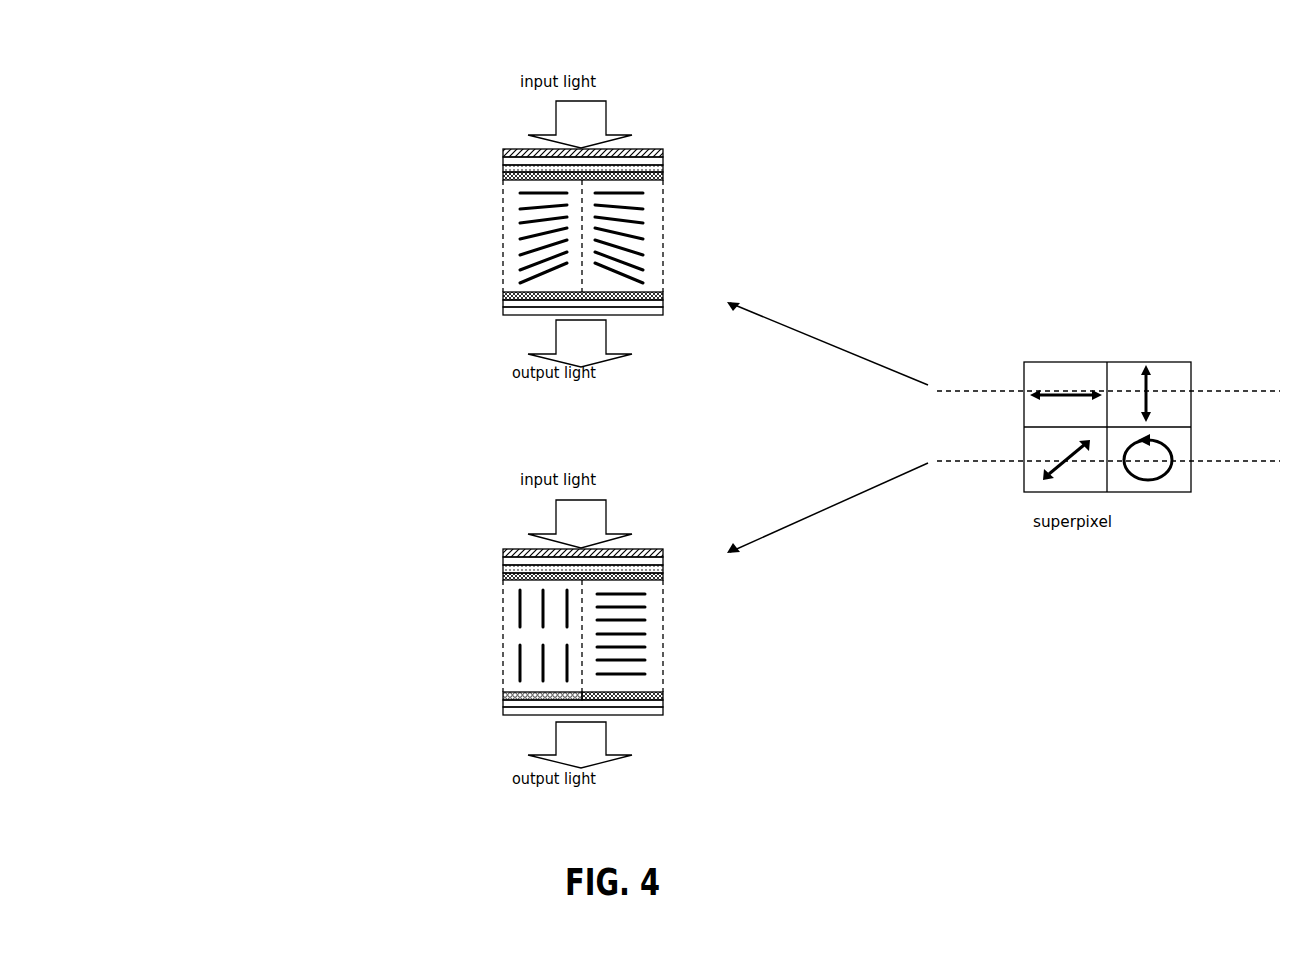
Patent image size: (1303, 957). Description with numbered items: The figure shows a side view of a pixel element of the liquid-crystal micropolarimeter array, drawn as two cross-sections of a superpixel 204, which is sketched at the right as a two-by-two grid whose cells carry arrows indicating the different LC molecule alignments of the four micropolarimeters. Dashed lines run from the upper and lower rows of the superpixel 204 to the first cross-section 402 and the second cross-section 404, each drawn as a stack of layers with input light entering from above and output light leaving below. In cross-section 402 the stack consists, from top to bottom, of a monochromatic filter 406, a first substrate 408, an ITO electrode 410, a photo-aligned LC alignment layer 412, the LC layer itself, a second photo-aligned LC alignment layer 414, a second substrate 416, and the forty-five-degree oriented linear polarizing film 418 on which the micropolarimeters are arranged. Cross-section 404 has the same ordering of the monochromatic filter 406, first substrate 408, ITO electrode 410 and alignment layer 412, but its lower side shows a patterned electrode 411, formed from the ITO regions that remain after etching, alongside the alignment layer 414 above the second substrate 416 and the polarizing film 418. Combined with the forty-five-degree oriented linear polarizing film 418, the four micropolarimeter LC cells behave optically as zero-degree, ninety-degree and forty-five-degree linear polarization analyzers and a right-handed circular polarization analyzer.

The cross-section 402 is at (632, 209).
The cross-section 404 is at (632, 554).
The monochromatic filter 406 is at (503, 152).
The first substrate 408 is at (503, 161).
The ITO electrode 410 is at (665, 167).
The electrodes 411 is at (503, 695).
The photo-aligned LC alignment layer 412 is at (663, 177).
The photo-aligned LC alignment layer 414 is at (663, 293).
The second substrate 416 is at (503, 303).
The 45° oriented linear polarizing film 418 is at (503, 708).
The superpixel 204 is at (1111, 343).